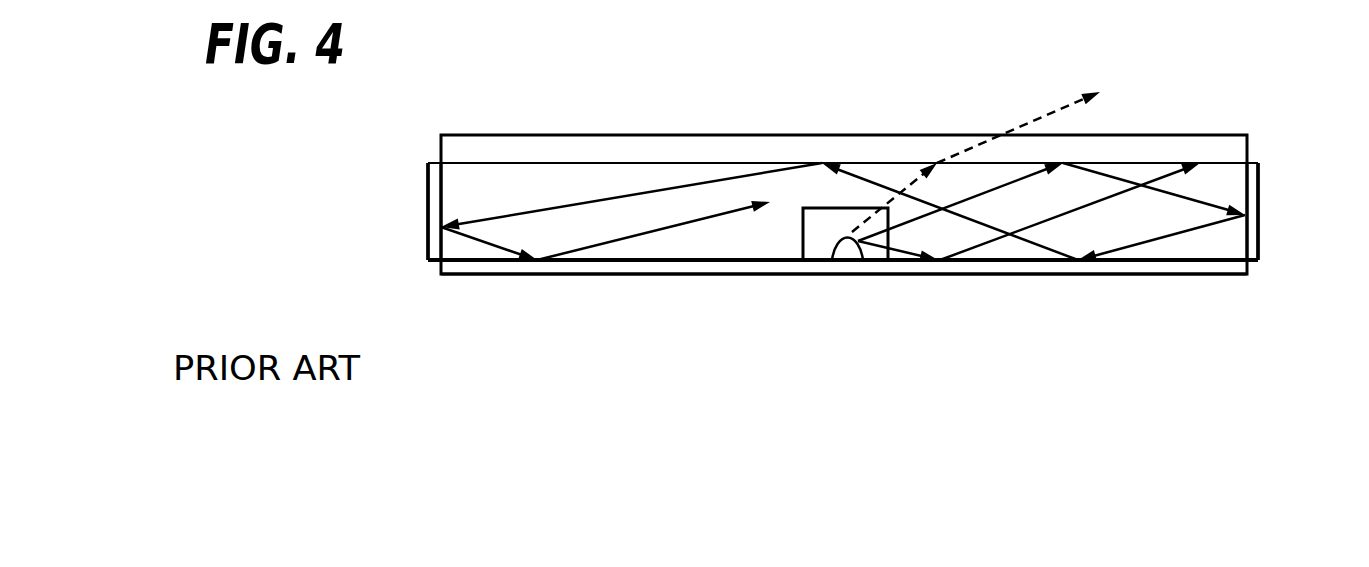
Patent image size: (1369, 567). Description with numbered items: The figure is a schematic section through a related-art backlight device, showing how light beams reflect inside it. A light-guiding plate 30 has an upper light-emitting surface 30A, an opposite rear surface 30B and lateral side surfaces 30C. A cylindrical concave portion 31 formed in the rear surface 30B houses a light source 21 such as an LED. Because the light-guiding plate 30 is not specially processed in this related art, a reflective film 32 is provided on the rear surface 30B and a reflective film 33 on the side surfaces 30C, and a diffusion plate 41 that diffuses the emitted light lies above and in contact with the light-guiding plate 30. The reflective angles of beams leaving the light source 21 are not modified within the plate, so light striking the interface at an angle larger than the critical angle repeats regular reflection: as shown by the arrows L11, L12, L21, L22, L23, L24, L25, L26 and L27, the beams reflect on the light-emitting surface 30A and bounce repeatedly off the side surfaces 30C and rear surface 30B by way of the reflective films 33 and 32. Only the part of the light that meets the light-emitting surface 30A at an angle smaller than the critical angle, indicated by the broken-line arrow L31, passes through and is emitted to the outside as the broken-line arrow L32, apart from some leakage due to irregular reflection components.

The light source 21 is at (848, 252).
The light-guiding plate 30 is at (1233, 186).
The light-emitting surface 30A is at (742, 150).
The rear surface 30B is at (682, 276).
The side surfaces 30C is at (425, 216).
The cylindrical concave portion 31 is at (816, 245).
The reflective film 32 is at (1114, 276).
The reflective film 33 is at (427, 180).
The diffusion plate 41 is at (1243, 146).
The light beam L11 is at (900, 262).
The light beam L12 is at (987, 243).
The light beam L21 is at (937, 211).
The light beam L22 is at (1140, 188).
The light beam L23 is at (1182, 237).
The light beam L24 is at (863, 178).
The light beam L25 is at (625, 195).
The light beam L26 is at (473, 238).
The light beam L27 is at (613, 241).
The light beam L31 is at (915, 187).
The light beam L32 is at (1050, 110).